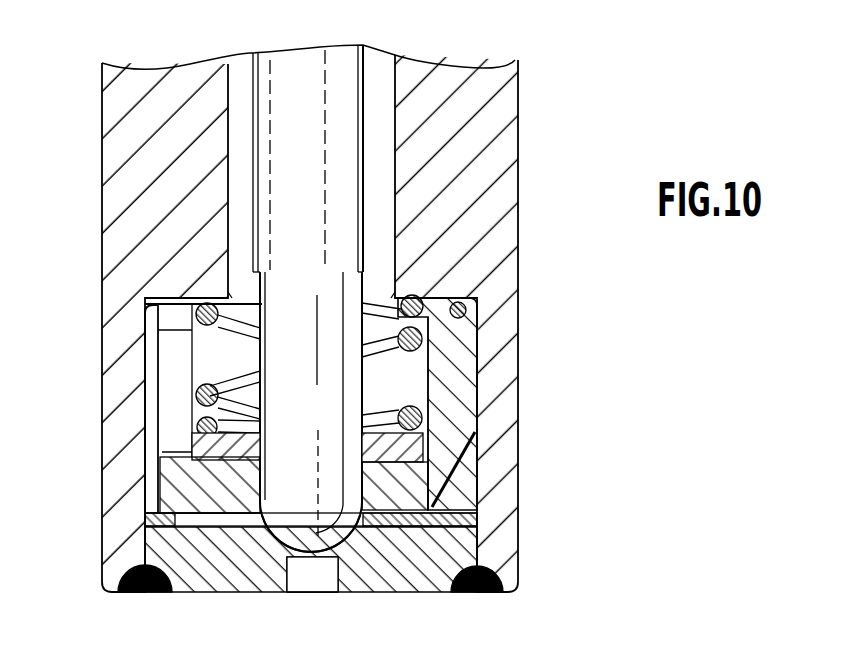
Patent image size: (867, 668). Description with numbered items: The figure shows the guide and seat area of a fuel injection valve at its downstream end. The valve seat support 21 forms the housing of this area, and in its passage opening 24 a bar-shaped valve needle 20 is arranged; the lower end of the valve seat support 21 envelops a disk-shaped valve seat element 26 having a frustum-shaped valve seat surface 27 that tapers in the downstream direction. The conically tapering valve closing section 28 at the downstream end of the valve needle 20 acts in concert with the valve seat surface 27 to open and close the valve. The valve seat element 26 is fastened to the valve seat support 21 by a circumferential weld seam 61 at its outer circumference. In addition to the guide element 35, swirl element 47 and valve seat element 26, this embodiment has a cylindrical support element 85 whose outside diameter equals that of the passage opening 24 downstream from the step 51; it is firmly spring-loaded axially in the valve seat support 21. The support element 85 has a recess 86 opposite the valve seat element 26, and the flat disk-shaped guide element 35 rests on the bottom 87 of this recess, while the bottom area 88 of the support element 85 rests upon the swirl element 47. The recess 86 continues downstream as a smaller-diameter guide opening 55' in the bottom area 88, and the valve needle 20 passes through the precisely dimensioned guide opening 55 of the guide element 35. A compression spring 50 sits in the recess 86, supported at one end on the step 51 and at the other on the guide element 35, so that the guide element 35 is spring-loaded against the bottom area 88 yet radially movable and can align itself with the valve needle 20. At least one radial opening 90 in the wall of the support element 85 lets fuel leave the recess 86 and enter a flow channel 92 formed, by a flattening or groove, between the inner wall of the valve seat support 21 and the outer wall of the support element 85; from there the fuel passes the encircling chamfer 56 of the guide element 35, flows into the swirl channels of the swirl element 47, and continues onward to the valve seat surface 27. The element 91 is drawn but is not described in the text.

The valve needle 20 is at (290, 94).
The valve seat support 21 is at (497, 147).
The passage opening 24 is at (228, 161).
The valve seat element 26 is at (202, 572).
The valve seat surface 27 is at (350, 536).
The valve closing section 28 is at (288, 576).
The guide element 35 is at (186, 434).
The swirl element 47 is at (448, 520).
The compression spring 50 is at (440, 348).
The step 51 is at (478, 307).
The guide opening 55 is at (311, 412).
The guide opening 55' is at (317, 402).
The chamfer 56 is at (162, 493).
The weld seam 61 is at (477, 590).
The support element 85 is at (455, 394).
The recess 86 is at (198, 350).
The bottom 87 is at (440, 447).
The bottom area 88 is at (410, 478).
The radial opening 90 is at (172, 379).
The inner sleeve 91 is at (160, 341).
The flow channel 92 is at (175, 487).